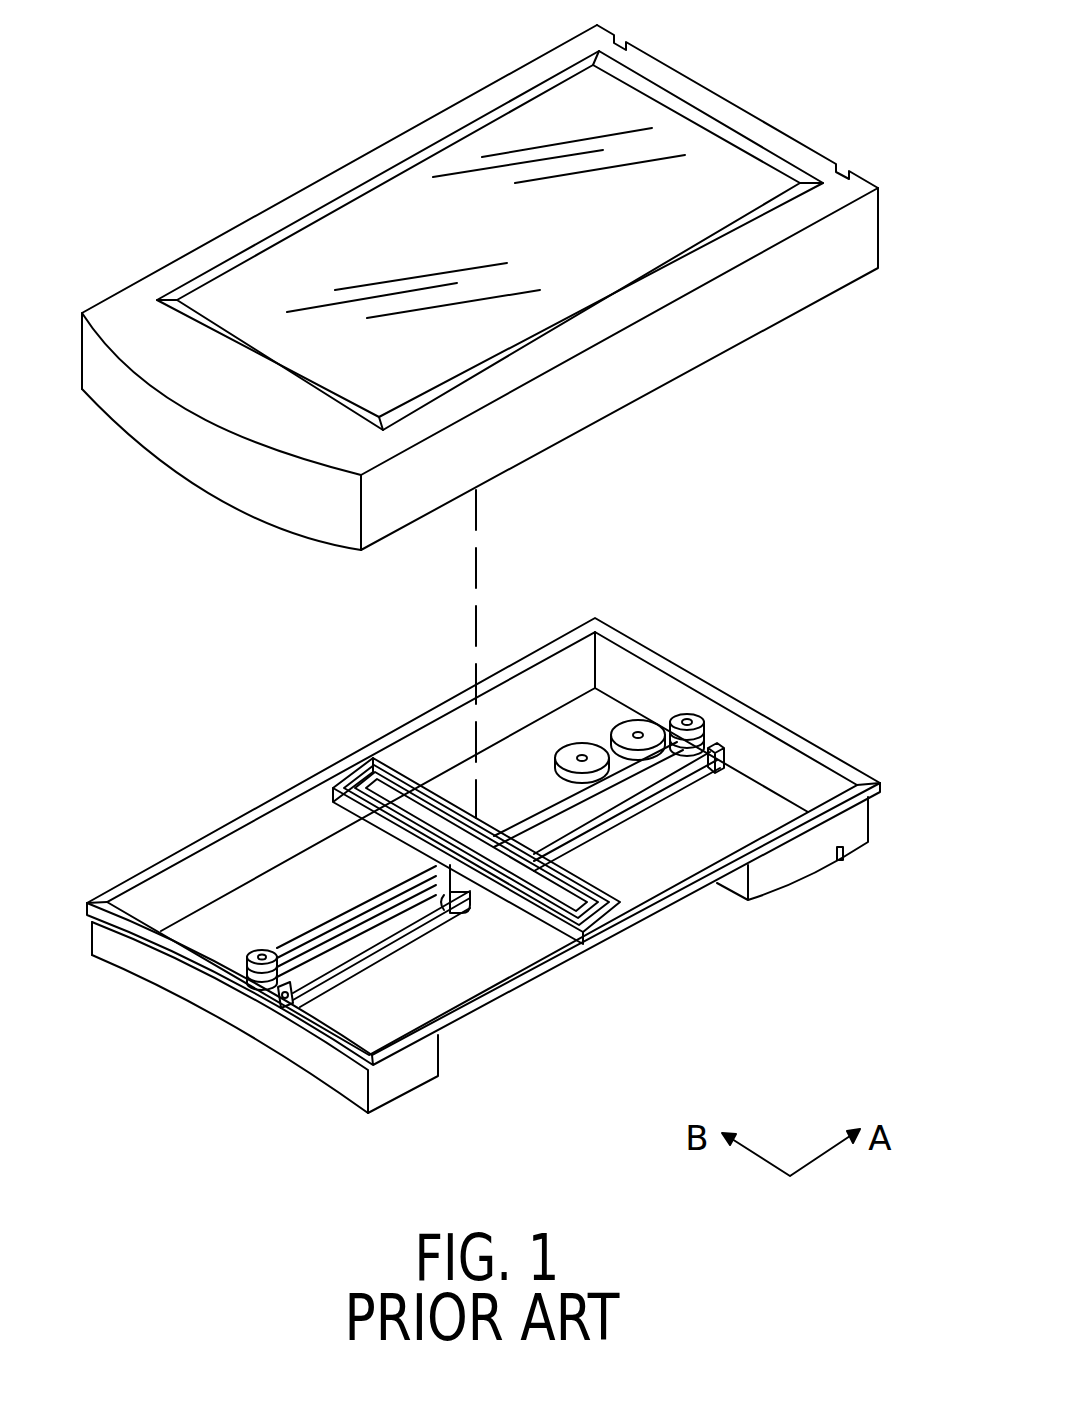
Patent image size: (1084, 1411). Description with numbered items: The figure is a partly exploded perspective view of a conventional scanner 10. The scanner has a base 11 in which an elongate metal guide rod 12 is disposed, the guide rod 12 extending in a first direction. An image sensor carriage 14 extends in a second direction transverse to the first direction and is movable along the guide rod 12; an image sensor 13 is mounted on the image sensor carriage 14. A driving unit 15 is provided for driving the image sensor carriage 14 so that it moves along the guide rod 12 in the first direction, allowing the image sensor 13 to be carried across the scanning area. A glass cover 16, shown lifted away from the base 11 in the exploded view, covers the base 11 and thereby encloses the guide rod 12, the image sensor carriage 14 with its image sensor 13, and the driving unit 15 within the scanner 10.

The scanner base 10 is at (793, 728).
The base 11 is at (833, 751).
The elongate metal guide rod 12 is at (607, 816).
The image sensor 13 is at (563, 905).
The image sensor carriage 14 is at (522, 900).
The driving unit 15 is at (650, 718).
The glass cover 16 is at (740, 110).